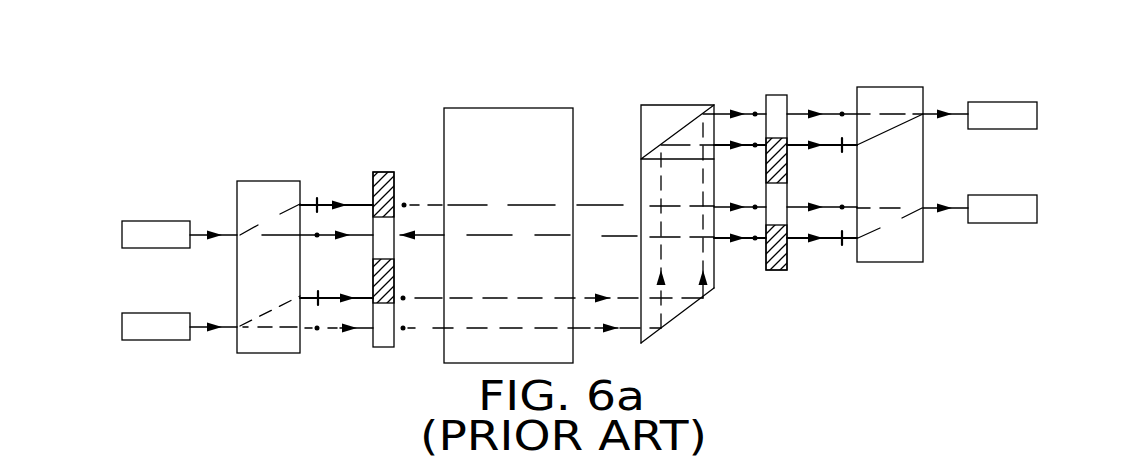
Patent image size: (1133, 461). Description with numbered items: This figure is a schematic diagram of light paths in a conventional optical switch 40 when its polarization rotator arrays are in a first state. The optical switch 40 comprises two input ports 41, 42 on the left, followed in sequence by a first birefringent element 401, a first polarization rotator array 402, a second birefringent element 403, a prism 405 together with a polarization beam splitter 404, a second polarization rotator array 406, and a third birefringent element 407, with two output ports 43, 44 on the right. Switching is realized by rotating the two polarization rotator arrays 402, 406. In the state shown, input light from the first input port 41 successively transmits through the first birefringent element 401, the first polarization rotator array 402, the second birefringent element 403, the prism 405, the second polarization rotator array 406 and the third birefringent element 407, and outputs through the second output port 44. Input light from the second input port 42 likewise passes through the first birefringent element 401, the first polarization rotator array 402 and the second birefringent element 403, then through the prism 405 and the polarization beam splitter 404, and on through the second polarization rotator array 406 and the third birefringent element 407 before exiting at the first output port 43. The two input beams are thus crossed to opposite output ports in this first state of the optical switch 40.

The optical switch 40 is at (853, 66).
The first input port 41 is at (153, 230).
The second input port 42 is at (153, 322).
The first output port 43 is at (1008, 116).
The second output port 44 is at (1008, 208).
The first birefringent element 401 is at (259, 193).
The first polarization rotator array 402 is at (378, 172).
The second birefringent element 403 is at (470, 140).
The polarization beam splitter 404 is at (666, 117).
The prism 405 is at (675, 308).
The second polarization rotator array 406 is at (776, 105).
The third birefringent element 407 is at (879, 101).